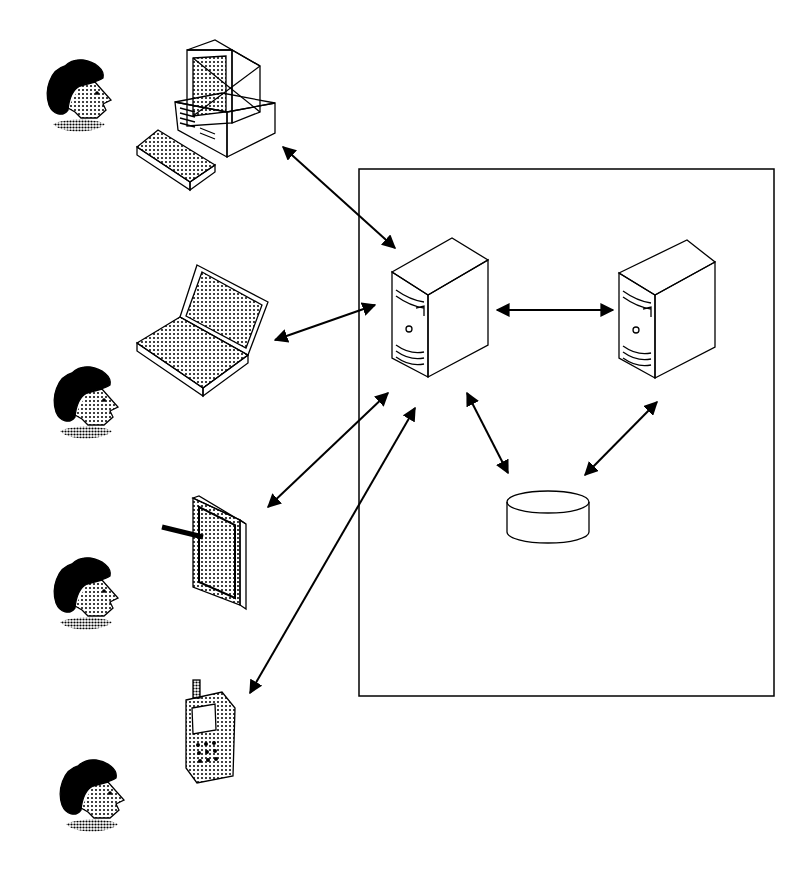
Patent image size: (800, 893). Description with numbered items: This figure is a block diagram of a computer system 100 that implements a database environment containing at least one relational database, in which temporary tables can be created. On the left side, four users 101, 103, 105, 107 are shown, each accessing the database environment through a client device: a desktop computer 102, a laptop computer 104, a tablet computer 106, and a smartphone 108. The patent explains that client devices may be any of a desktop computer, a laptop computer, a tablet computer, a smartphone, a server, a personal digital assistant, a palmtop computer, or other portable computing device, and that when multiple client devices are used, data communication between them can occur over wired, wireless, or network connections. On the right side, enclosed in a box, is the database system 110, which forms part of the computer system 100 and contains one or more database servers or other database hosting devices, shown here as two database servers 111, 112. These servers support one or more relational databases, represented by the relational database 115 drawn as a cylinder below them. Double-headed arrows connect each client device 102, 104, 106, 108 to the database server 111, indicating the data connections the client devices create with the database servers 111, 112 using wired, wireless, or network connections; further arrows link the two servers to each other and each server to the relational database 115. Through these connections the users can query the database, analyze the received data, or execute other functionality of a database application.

The computer system 100 is at (564, 829).
The user 101 is at (118, 157).
The client device 102 is at (222, 222).
The user 103 is at (127, 464).
The client device 104 is at (225, 431).
The user 105 is at (127, 657).
The client device 106 is at (225, 646).
The user 107 is at (130, 859).
The client device 108 is at (223, 829).
The database system 110 is at (680, 194).
The database server 111 is at (525, 379).
The database server 112 is at (760, 376).
The relational database 115 is at (575, 587).